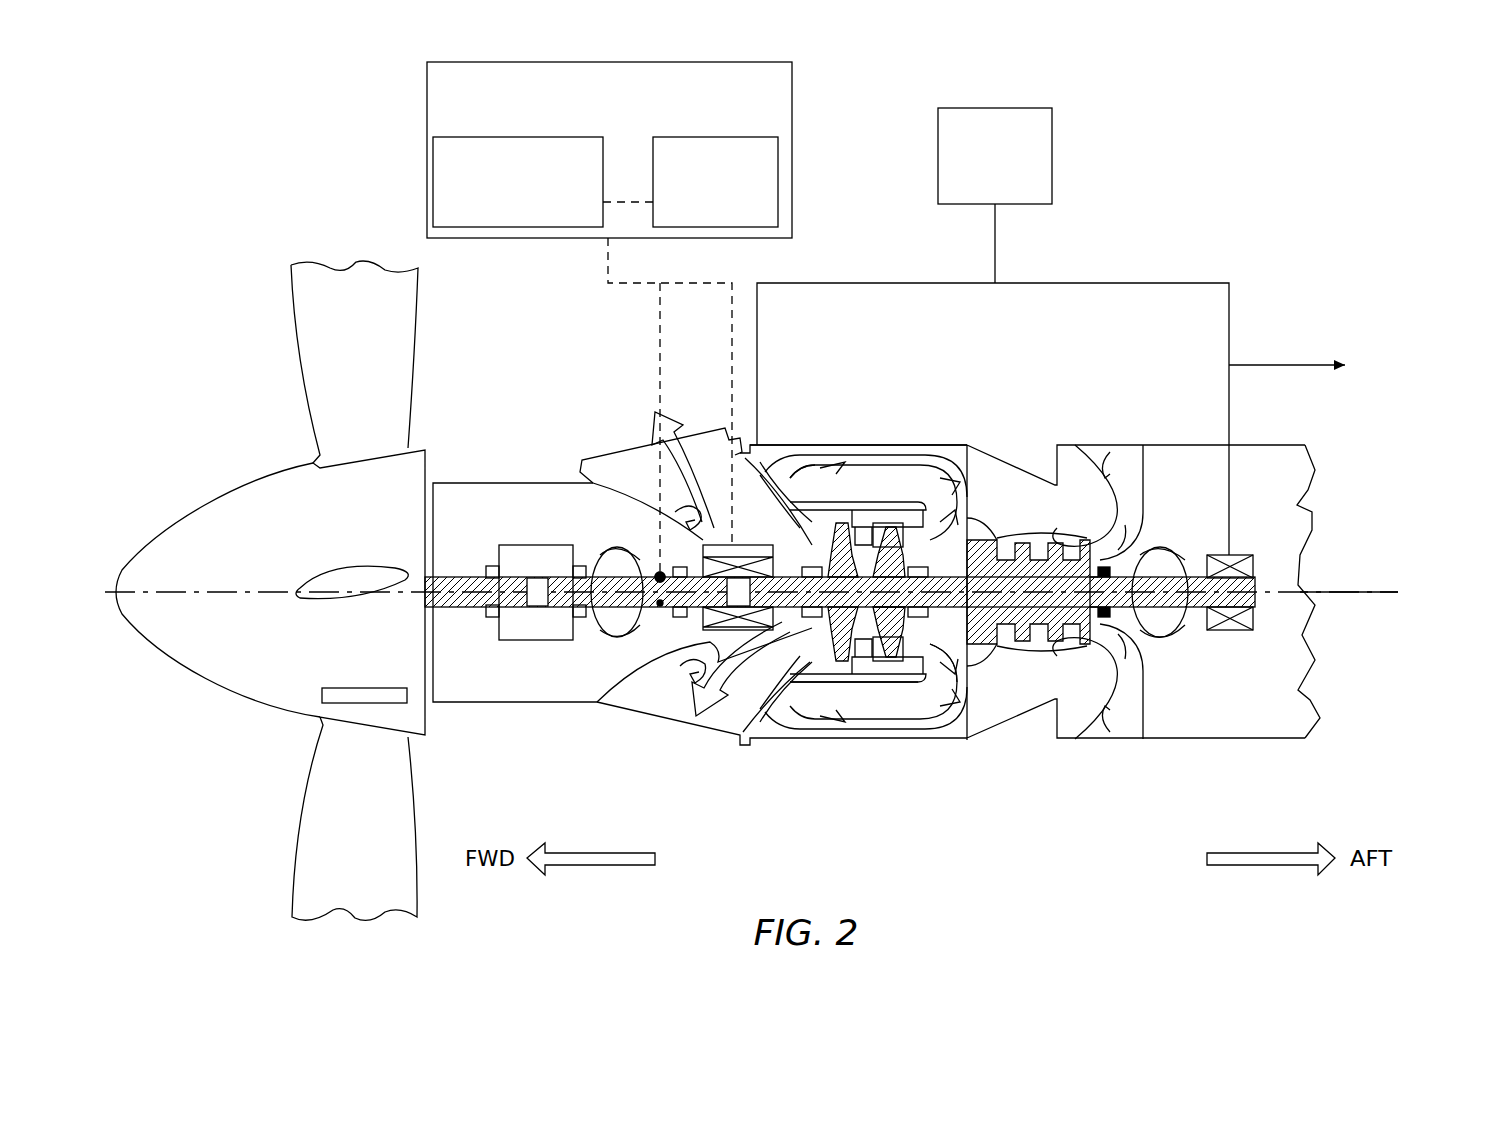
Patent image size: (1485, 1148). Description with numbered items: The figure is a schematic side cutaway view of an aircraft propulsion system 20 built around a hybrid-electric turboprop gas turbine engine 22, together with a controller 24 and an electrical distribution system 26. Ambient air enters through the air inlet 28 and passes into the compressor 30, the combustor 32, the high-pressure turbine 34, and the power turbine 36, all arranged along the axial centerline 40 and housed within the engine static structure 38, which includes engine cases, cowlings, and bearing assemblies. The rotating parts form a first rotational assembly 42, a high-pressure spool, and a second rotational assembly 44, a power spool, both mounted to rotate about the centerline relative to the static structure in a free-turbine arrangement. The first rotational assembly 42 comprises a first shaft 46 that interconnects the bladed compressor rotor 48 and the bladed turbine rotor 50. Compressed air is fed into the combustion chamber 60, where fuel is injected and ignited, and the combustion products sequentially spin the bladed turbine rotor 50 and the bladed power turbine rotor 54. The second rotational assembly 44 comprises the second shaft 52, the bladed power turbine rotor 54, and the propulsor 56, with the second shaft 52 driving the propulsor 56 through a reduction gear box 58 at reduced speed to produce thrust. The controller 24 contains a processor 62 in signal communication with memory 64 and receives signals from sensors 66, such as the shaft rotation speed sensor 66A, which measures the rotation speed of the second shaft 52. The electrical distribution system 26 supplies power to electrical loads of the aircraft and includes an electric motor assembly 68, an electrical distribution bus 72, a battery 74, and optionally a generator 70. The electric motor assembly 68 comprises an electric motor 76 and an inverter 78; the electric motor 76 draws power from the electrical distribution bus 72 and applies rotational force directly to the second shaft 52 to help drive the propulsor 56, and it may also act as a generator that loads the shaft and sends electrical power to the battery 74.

The propulsion system 20 is at (1330, 253).
The gas turbine engine 22 is at (950, 394).
The controller 24 is at (677, 113).
The electrical distribution system 26 is at (1234, 230).
The air inlet 28 is at (1133, 437).
The compressor 30 is at (1022, 662).
The combustor 32 is at (877, 450).
The high-pressure turbine 34 is at (940, 546).
The power turbine 36 is at (802, 637).
The engine static structure 38 is at (1168, 445).
The axial centerline 40 is at (1380, 592).
The first rotational assembly 42 is at (950, 640).
The second rotational assembly 44 is at (593, 640).
The first shaft 46 is at (965, 556).
The bladed compressor rotor 48 is at (1040, 538).
The bladed turbine rotor 50 is at (905, 650).
The second shaft 52 is at (800, 535).
The bladed power turbine rotor 54 is at (840, 525).
The propulsor 56 is at (222, 688).
The reduction gear box 58 is at (540, 545).
The combustion chamber 60 is at (882, 698).
The processor 62 is at (532, 213).
The memory 64 is at (703, 213).
The sensors 66 is at (660, 605).
The shaft rotation speed sensor 66A is at (660, 577).
The electric motor assembly 68 is at (737, 645).
The generator 70 is at (1232, 630).
The electrical distribution bus 72 is at (878, 283).
The battery 74 is at (982, 188).
The electric motor 76 is at (690, 690).
The inverter 78 is at (722, 545).